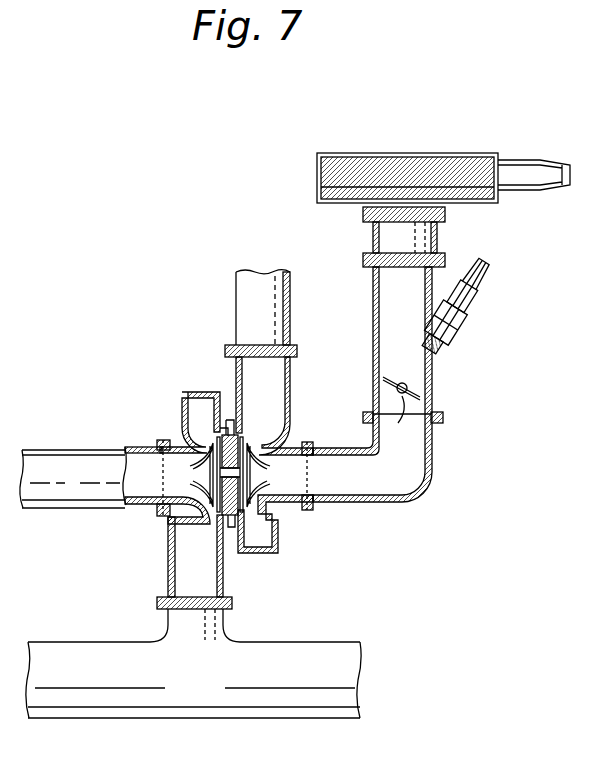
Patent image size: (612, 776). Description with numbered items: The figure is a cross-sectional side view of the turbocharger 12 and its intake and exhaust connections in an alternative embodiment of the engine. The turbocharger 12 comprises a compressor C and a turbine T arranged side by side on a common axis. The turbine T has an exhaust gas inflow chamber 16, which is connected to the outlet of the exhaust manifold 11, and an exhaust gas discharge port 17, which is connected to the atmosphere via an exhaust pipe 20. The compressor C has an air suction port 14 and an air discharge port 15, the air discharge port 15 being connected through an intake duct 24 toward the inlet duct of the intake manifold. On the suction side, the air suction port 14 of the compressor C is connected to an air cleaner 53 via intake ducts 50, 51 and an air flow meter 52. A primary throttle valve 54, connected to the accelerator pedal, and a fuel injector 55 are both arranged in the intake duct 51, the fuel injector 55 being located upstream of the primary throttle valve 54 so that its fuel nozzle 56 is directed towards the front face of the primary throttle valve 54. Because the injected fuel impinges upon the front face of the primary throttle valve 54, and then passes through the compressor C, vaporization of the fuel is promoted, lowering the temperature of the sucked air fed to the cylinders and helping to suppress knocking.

The exhaust manifold 11 is at (328, 651).
The turbocharger 12 is at (200, 376).
The air suction port 14 is at (288, 487).
The air discharge port 15 is at (275, 394).
The exhaust gas inflow chamber 16 is at (182, 568).
The exhaust gas discharge port 17 is at (175, 470).
The exhaust pipe 20 is at (78, 463).
The intake duct 24 is at (277, 295).
The intake duct 50 is at (425, 488).
The intake duct 51 is at (431, 384).
The air flow meter 52 is at (420, 237).
The air cleaner 53 is at (430, 158).
The primary throttle valve 54 is at (428, 428).
The fuel injector 55 is at (473, 310).
The fuel nozzle 56 is at (440, 360).
The turbine T is at (206, 468).
The compressor C is at (259, 476).